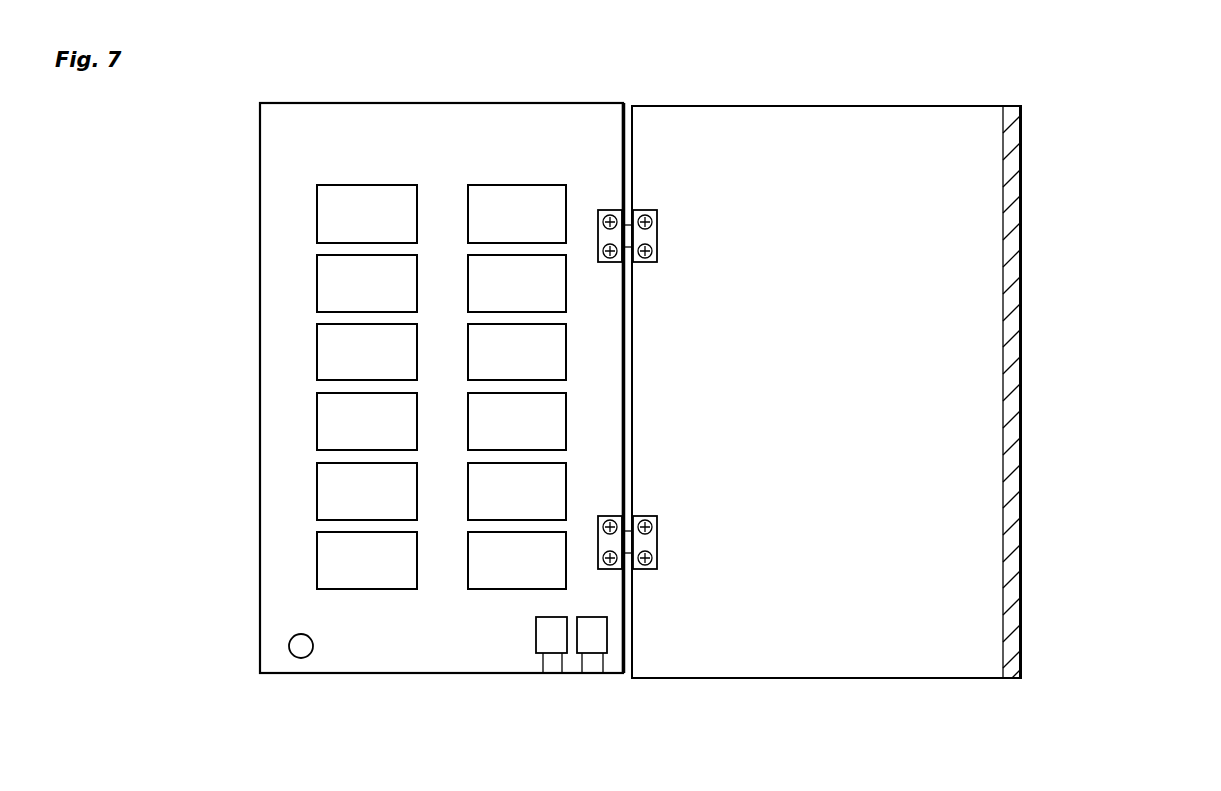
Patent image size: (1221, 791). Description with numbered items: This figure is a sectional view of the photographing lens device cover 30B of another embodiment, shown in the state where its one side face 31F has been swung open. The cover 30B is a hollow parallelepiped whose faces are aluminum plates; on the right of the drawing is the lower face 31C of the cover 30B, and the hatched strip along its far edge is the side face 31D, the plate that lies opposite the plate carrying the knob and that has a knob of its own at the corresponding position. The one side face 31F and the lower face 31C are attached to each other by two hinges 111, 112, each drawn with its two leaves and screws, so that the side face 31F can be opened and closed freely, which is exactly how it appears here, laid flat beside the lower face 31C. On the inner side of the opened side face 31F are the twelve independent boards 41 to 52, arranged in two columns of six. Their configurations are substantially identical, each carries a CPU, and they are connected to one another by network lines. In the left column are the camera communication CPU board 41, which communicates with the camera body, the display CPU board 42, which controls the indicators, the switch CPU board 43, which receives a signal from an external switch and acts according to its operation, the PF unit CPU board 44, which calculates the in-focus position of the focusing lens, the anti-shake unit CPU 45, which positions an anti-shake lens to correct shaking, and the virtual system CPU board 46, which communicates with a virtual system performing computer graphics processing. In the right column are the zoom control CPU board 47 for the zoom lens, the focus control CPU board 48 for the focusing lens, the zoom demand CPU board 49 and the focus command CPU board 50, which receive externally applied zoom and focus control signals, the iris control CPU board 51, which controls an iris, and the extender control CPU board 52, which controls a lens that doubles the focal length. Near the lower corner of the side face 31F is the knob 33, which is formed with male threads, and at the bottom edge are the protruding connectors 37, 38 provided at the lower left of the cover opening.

The photographing lens device cover 30B is at (1085, 123).
The lower face 31C is at (872, 650).
The side face 31D is at (1015, 525).
The one side face 31F is at (413, 676).
The knob 33 is at (298, 648).
The protruding connector 37 is at (593, 642).
The protruding connector 38 is at (558, 647).
The camera communication CPU board 41 is at (370, 572).
The display CPU board 42 is at (332, 503).
The switch CPU board 43 is at (338, 432).
The PF unit CPU board 44 is at (355, 362).
The anti-shake unit CPU 45 is at (342, 292).
The virtual system CPU board 46 is at (363, 208).
The zoom control CPU board 47 is at (539, 203).
The focus control CPU board 48 is at (533, 277).
The zoom demand CPU board 49 is at (526, 343).
The focus command CPU board 50 is at (525, 432).
The iris control CPU board 51 is at (540, 493).
The extender control CPU board 52 is at (508, 570).
The hinge 111 is at (647, 543).
The hinge 112 is at (652, 237).